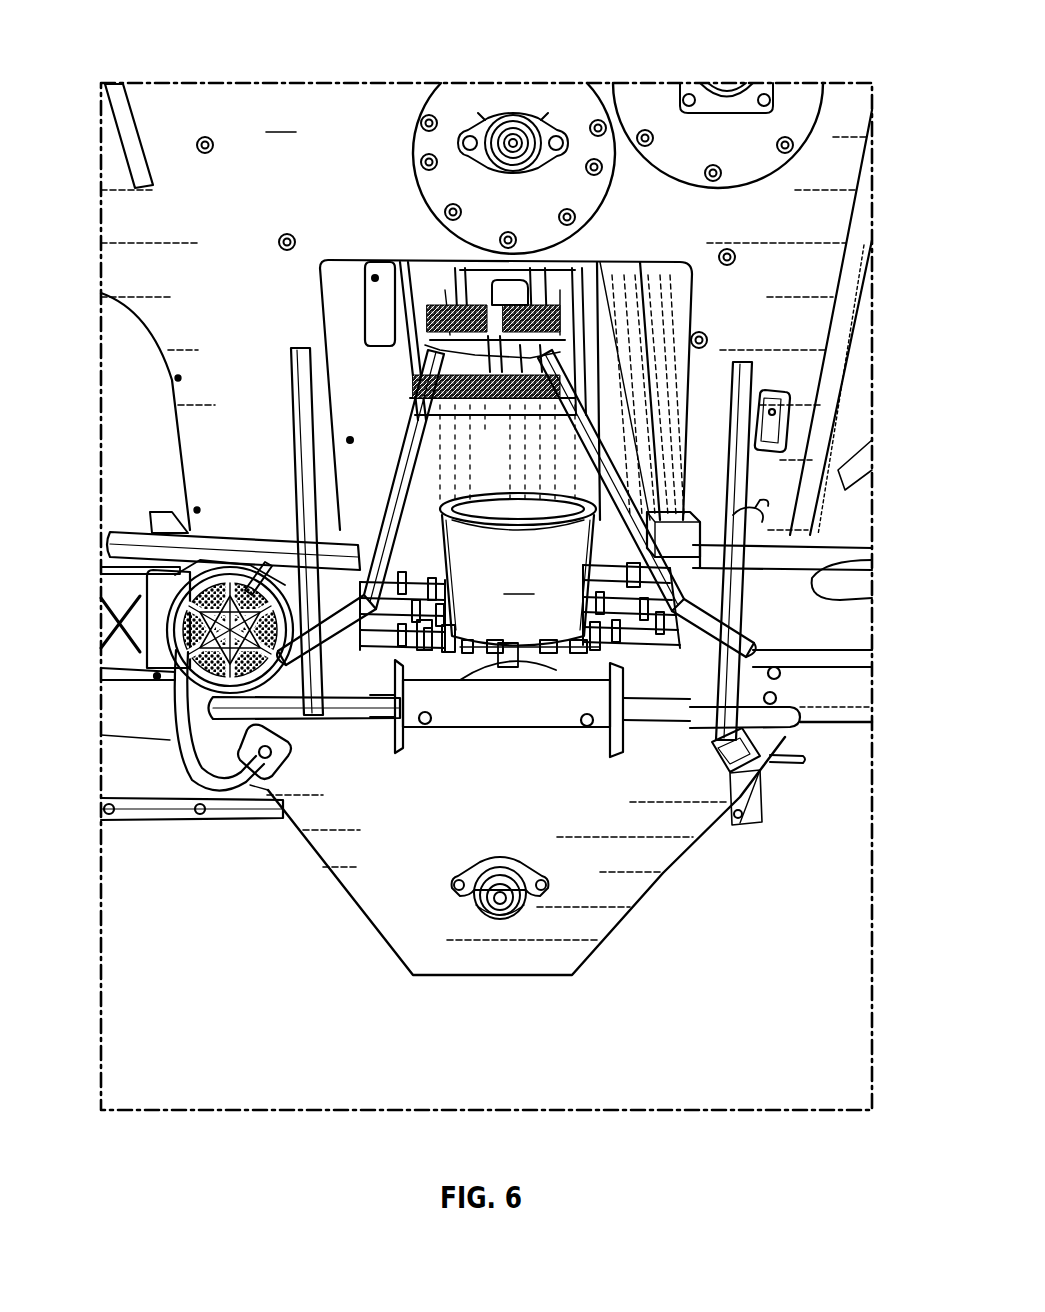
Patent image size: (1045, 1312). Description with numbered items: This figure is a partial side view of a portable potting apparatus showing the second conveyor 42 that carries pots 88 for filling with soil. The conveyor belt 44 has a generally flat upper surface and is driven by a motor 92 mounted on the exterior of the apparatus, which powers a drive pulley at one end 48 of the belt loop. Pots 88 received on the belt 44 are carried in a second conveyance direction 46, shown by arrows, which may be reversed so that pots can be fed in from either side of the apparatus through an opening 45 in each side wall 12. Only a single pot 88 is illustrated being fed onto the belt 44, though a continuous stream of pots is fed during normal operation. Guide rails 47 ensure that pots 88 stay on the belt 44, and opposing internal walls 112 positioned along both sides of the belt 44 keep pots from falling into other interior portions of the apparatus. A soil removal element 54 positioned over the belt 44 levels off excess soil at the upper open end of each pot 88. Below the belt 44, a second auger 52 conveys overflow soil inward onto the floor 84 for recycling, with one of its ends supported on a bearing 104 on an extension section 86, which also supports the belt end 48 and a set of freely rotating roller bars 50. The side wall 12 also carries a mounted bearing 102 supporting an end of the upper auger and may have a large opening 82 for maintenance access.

The side wall 12 is at (486, 596).
The second conveyor 42 is at (568, 468).
The conveyor belt 44 is at (417, 500).
The opening 45 is at (343, 342).
The second conveyance direction 46 is at (497, 418).
The guide rails 47 is at (386, 526).
The end of the belt 48 is at (395, 580).
The roller bars 50 is at (716, 762).
The second auger 52 is at (535, 660).
The soil removal element 54 is at (515, 305).
The opening 82 is at (138, 422).
The floor 84 is at (160, 652).
The extension section 86 is at (358, 886).
The pot 88 is at (518, 569).
The motor 92 is at (177, 620).
The bearing 102 is at (520, 113).
The bearing 104 is at (470, 888).
The internal walls 112 is at (327, 292).